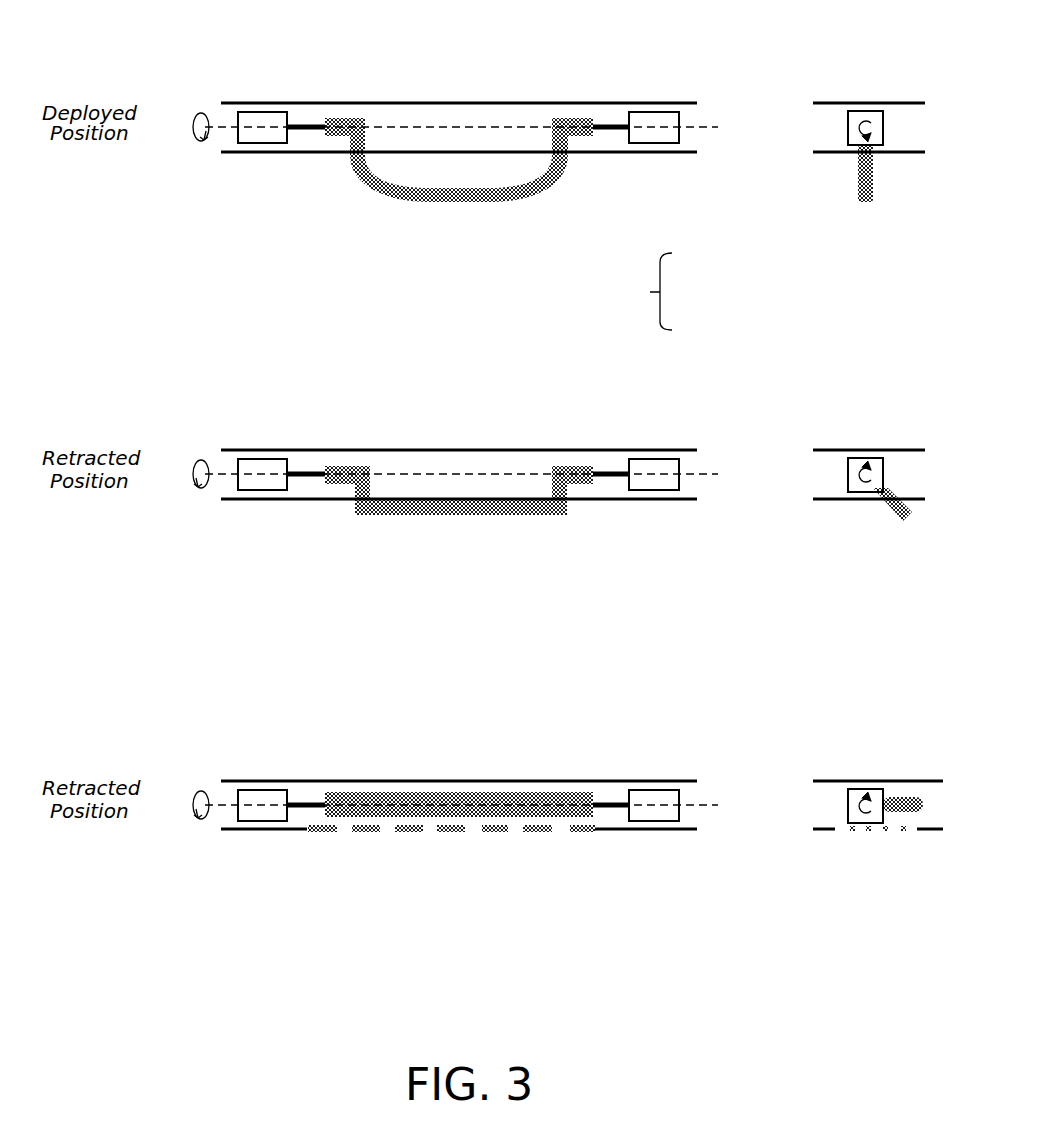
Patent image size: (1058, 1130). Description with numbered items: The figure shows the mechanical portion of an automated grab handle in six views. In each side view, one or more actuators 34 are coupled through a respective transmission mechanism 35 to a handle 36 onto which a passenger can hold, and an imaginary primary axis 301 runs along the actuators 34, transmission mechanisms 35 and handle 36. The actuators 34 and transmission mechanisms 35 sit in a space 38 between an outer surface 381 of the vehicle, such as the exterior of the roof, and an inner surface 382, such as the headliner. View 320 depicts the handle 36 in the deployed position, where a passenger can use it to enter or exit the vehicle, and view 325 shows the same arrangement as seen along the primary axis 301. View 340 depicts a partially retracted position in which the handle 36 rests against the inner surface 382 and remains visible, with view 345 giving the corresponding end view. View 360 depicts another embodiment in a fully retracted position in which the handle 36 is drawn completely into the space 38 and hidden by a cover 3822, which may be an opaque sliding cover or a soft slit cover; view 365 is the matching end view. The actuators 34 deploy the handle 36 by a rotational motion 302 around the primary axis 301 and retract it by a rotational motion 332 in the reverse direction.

The primary axis 301 is at (455, 120).
The rotational motion 302 is at (188, 104).
The rotational motion 332 is at (188, 451).
The actuator 34 is at (262, 112).
The transmission mechanism 35 is at (308, 124).
The handle 36 is at (392, 185).
The space 38 is at (669, 291).
The outer surface 381 is at (806, 100).
The inner surface 382 is at (806, 147).
The cover 3822 is at (547, 831).
The view 320 is at (467, 247).
The view 325 is at (865, 247).
The view 340 is at (467, 592).
The view 345 is at (865, 594).
The view 360 is at (467, 924).
The view 365 is at (865, 926).